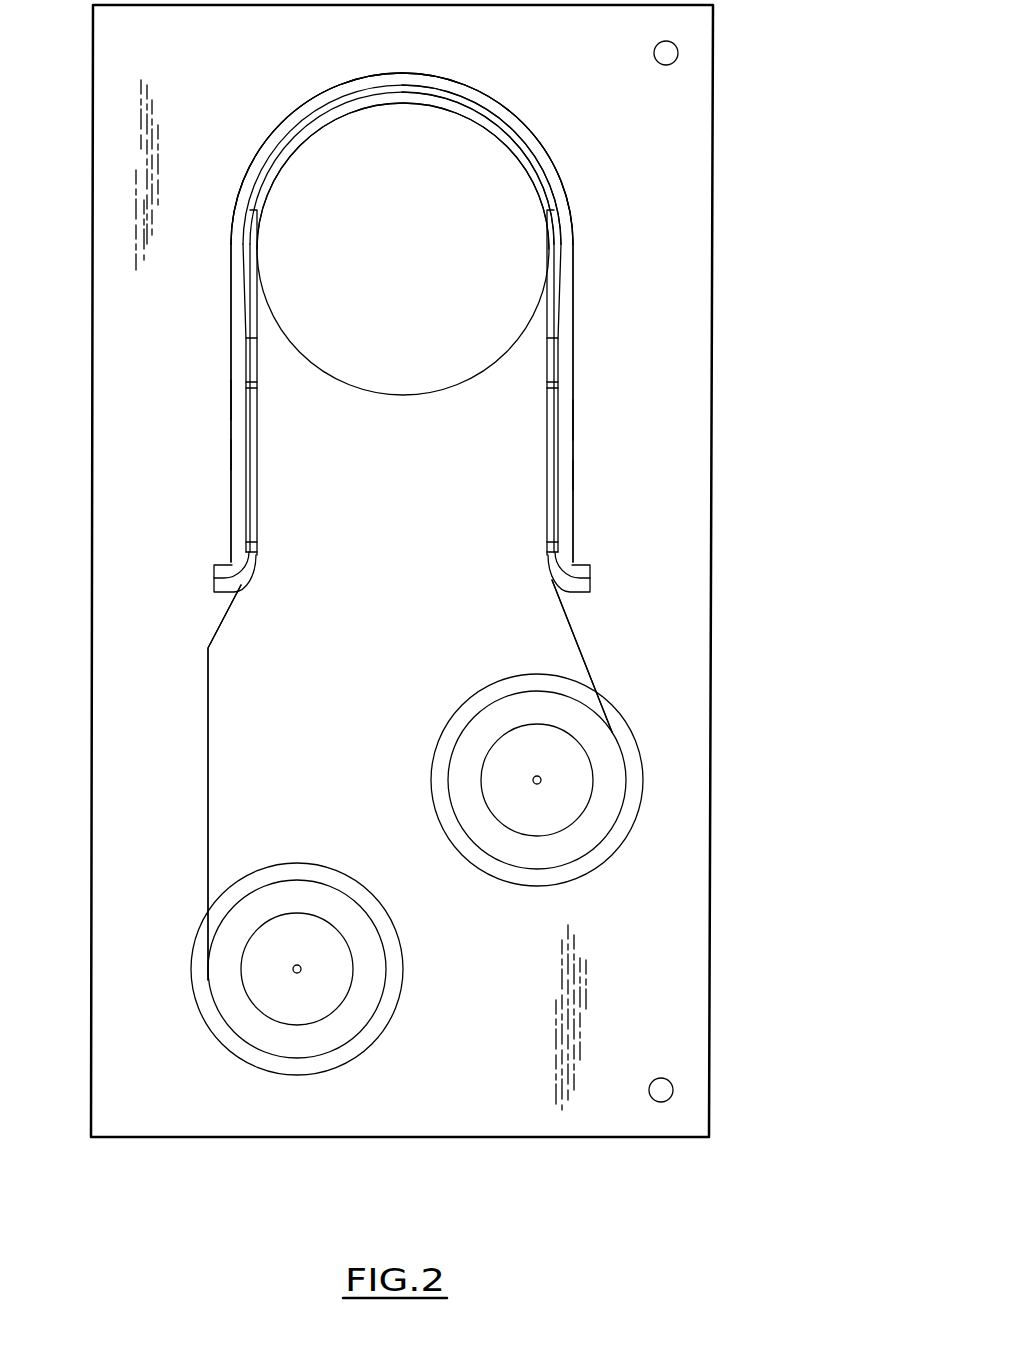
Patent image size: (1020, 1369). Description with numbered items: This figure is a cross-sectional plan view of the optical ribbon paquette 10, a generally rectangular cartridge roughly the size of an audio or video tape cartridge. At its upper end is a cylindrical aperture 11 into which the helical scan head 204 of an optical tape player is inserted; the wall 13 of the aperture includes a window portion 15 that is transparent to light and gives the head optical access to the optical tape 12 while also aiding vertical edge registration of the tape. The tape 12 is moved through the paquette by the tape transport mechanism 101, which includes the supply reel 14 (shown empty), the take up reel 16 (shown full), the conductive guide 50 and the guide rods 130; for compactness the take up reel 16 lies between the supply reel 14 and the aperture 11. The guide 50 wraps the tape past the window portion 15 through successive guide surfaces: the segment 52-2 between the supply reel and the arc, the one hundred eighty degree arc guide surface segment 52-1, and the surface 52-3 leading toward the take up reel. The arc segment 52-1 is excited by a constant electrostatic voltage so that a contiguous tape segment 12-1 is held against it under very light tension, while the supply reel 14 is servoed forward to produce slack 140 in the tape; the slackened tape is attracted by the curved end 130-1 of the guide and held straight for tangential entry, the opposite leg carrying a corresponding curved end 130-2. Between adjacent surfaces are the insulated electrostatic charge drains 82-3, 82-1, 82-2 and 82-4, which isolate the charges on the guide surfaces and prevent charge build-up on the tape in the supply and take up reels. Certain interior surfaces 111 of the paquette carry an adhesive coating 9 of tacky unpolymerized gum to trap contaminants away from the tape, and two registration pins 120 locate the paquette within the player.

The adhesive coating 9 is at (665, 1015).
The optical ribbon paquette 10 is at (765, 543).
The cylindrical aperture 11 is at (515, 128).
The optical tape 12 is at (577, 642).
The tape segment 12-1 is at (482, 122).
The wall of aperture 13 is at (318, 368).
The supply reel 14 is at (295, 1076).
The window portion 15 is at (260, 226).
The take up reel 16 is at (537, 888).
The conductive guide 50 is at (262, 150).
The 180 degree arc guide surface segment 52-1 is at (556, 194).
The guide surface segment 52-2 is at (258, 482).
The guide surface segment 52-3 is at (546, 447).
The insulated electrostatic charge drain 82-1 is at (246, 352).
The insulated electrostatic charge drain 82-2 is at (553, 366).
The insulated electrostatic charge drain 82-3 is at (258, 552).
The insulated electrostatic charge drain 82-4 is at (547, 547).
The tape transport mechanism 101 is at (210, 451).
The interior surfaces 111 is at (665, 682).
The registration pins 120 is at (678, 50).
The guide rods 130 is at (232, 395).
The curved end of guide segment 130-1 is at (247, 548).
The hook end 130-2 is at (576, 562).
The slack 140 is at (213, 633).
The helical scan head 204 is at (518, 254).